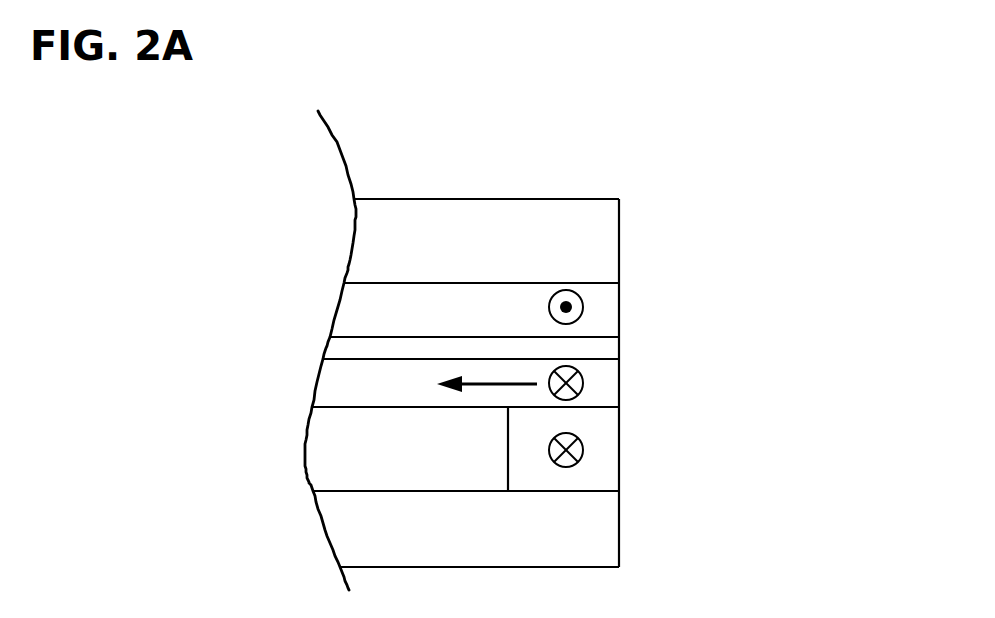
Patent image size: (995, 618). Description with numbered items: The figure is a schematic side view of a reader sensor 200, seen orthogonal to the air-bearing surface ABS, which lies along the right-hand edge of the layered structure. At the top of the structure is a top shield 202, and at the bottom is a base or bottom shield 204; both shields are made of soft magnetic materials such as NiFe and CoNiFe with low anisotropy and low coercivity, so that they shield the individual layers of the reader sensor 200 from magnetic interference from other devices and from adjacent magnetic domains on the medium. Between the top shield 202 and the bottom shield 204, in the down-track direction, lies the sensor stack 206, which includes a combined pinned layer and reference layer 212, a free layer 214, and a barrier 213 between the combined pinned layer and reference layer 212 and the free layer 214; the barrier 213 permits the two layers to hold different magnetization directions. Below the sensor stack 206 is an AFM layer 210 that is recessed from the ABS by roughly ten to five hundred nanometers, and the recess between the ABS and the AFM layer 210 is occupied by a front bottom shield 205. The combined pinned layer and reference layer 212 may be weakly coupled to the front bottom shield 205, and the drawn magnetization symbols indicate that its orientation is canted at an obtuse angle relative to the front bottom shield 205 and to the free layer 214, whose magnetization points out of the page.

The reader sensor 200 is at (236, 174).
The top shield 202 is at (619, 256).
The bottom shield 204 is at (619, 528).
The front bottom shield 205 is at (619, 453).
The sensor stack 206 is at (295, 277).
The AFM layer 210 is at (305, 463).
The combined pinned layer and reference layer 212 is at (619, 391).
The barrier 213 is at (619, 353).
The free layer 214 is at (619, 302).
The air-bearing surface ABS is at (632, 553).